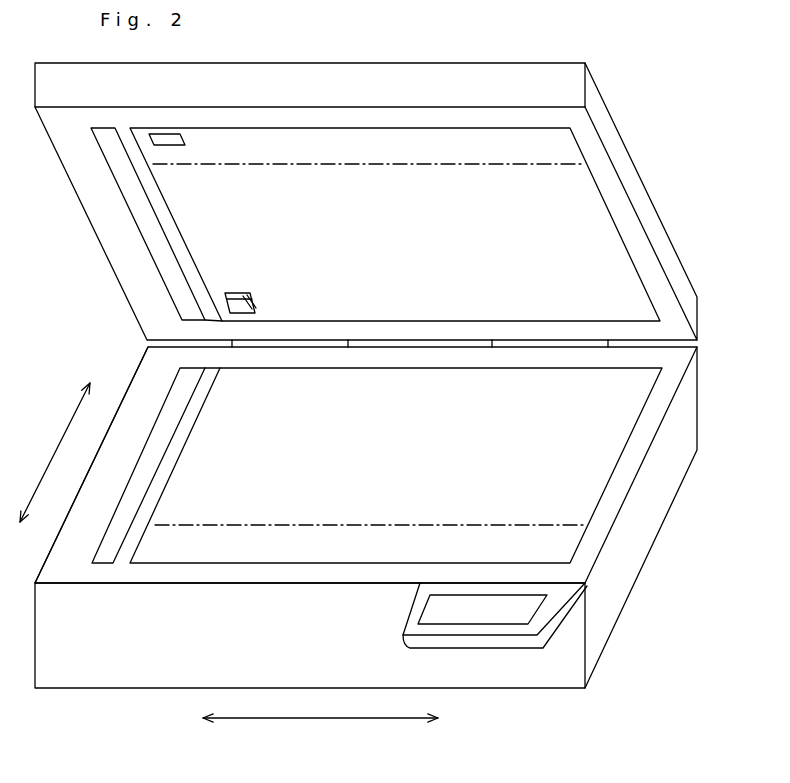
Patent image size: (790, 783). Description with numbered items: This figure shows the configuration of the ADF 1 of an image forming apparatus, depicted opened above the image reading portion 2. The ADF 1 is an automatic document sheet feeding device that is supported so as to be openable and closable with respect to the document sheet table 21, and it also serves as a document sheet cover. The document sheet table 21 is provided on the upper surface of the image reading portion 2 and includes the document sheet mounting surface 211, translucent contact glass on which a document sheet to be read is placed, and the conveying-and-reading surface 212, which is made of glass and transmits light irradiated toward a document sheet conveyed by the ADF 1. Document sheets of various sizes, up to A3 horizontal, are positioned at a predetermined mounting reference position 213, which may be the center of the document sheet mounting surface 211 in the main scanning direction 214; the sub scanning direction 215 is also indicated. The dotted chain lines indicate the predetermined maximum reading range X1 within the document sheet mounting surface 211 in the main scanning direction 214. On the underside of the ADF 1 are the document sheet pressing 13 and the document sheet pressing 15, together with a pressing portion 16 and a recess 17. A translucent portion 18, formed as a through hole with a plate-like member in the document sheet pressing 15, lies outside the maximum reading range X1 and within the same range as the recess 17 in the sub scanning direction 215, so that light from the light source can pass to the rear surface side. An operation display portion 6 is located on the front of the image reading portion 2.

The ADF 1 is at (84, 242).
The image reading portion 2 is at (651, 575).
The operation display portion 6 is at (414, 613).
The document sheet pressing 13 is at (103, 128).
The document sheet pressing 15 is at (333, 128).
The pressing portion 16 is at (226, 316).
The recess 17 is at (258, 300).
The translucent portion 18 is at (184, 137).
The document sheet table 21 is at (232, 583).
The document sheet mounting surface 211 is at (173, 583).
The conveying-and-reading surface 212 is at (105, 583).
The mounting reference position 213 is at (232, 372).
The main scanning direction 214 is at (60, 443).
The sub scanning direction 215 is at (310, 718).
The maximum reading range X1 is at (548, 215).